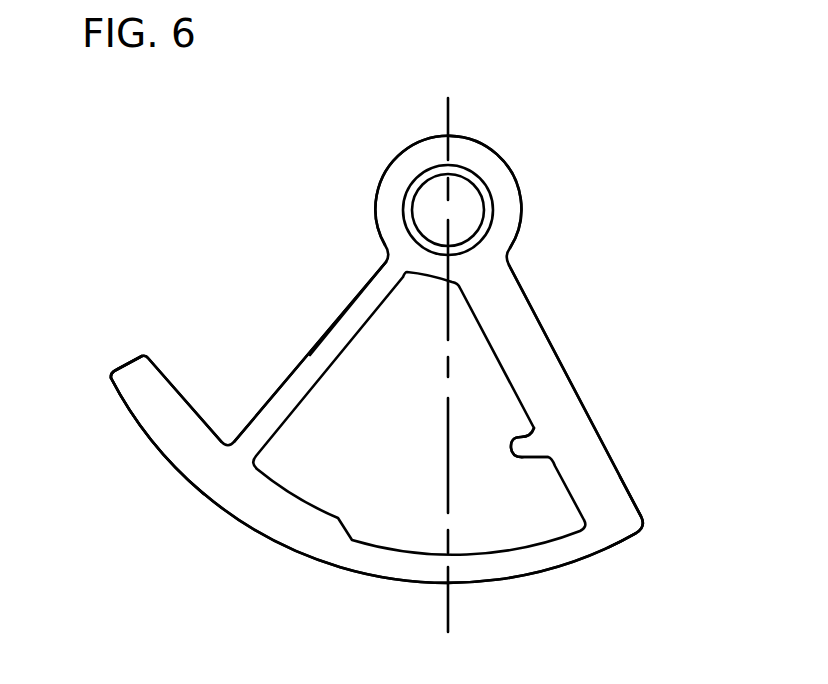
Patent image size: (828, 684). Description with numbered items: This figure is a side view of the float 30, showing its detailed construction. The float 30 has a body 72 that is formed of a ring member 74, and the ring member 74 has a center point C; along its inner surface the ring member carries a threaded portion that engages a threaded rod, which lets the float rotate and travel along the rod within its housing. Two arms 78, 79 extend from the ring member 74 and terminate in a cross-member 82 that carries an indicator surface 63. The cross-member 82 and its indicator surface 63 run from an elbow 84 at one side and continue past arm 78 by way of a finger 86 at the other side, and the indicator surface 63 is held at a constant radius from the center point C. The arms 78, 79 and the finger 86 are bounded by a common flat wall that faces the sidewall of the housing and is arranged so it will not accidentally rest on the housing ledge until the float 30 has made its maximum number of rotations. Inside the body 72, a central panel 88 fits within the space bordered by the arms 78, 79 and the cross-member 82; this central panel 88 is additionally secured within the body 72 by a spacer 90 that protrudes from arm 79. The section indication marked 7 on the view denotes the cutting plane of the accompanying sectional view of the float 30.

The float 30 is at (312, 313).
The ring member 74 is at (416, 130).
The center point C is at (449, 211).
The section line 7- 7 is at (448, 98).
The central panel 88 is at (418, 433).
The spacer 90 is at (523, 450).
The body 72 is at (360, 271).
The arm 78 is at (300, 368).
The arm 79 is at (558, 360).
The cross-member 82 is at (176, 494).
The finger 86 is at (127, 398).
The indicator surface 63 is at (283, 543).
The elbow 84 is at (645, 527).